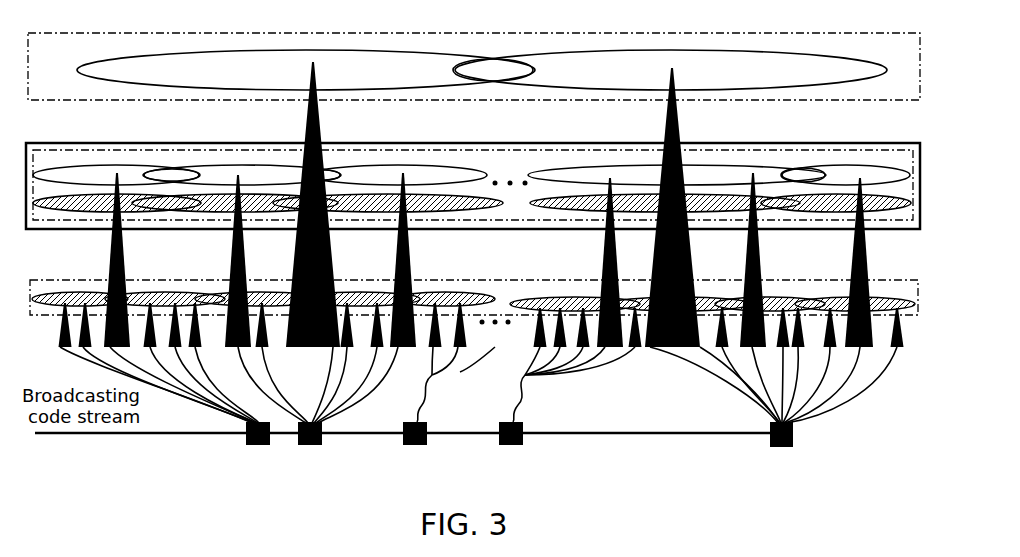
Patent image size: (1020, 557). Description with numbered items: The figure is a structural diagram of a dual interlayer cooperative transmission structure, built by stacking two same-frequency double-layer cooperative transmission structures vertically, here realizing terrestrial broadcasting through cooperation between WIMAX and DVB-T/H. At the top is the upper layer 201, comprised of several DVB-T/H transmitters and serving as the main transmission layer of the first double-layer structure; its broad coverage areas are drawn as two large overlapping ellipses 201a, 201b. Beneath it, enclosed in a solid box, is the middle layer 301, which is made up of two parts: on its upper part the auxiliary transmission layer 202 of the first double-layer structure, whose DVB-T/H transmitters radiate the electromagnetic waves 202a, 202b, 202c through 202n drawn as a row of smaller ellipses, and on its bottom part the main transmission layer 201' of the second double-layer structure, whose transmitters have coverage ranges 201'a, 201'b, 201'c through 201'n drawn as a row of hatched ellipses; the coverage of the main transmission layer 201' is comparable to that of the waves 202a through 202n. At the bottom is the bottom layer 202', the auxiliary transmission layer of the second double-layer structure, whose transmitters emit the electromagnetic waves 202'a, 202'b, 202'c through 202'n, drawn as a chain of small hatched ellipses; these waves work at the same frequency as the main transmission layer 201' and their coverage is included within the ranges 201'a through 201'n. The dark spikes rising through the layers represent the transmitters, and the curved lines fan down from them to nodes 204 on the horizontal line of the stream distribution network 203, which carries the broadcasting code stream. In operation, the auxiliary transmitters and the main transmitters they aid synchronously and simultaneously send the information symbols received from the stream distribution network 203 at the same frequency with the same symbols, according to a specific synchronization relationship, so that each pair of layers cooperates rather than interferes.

The middle layer 301 is at (64, 143).
The upper layer 201 is at (474, 53).
The upper layer coverage area 201a is at (360, 35).
The upper layer coverage area 201b is at (652, 36).
The auxiliary transmission layer 202 is at (473, 173).
The electromagnetic wave 202a is at (133, 165).
The electromagnetic wave 202b is at (247, 163).
The electromagnetic wave 202c is at (417, 163).
The electromagnetic wave 202n is at (860, 167).
The main transmission layer 201' is at (472, 227).
The main transmission layer coverage range 201'a is at (117, 221).
The main transmission layer coverage range 201'b is at (235, 221).
The main transmission layer coverage range 201'c is at (388, 221).
The main transmission layer coverage range 201'n is at (836, 223).
The bottom layer 202' is at (474, 289).
The bottom layer electromagnetic wave 202'a is at (80, 280).
The bottom layer electromagnetic wave 202'b is at (149, 280).
The bottom layer electromagnetic wave 202'c is at (228, 280).
The bottom layer electromagnetic wave 202'n is at (855, 285).
The stream distribution network 203 is at (137, 435).
The distribution node 204 is at (793, 447).